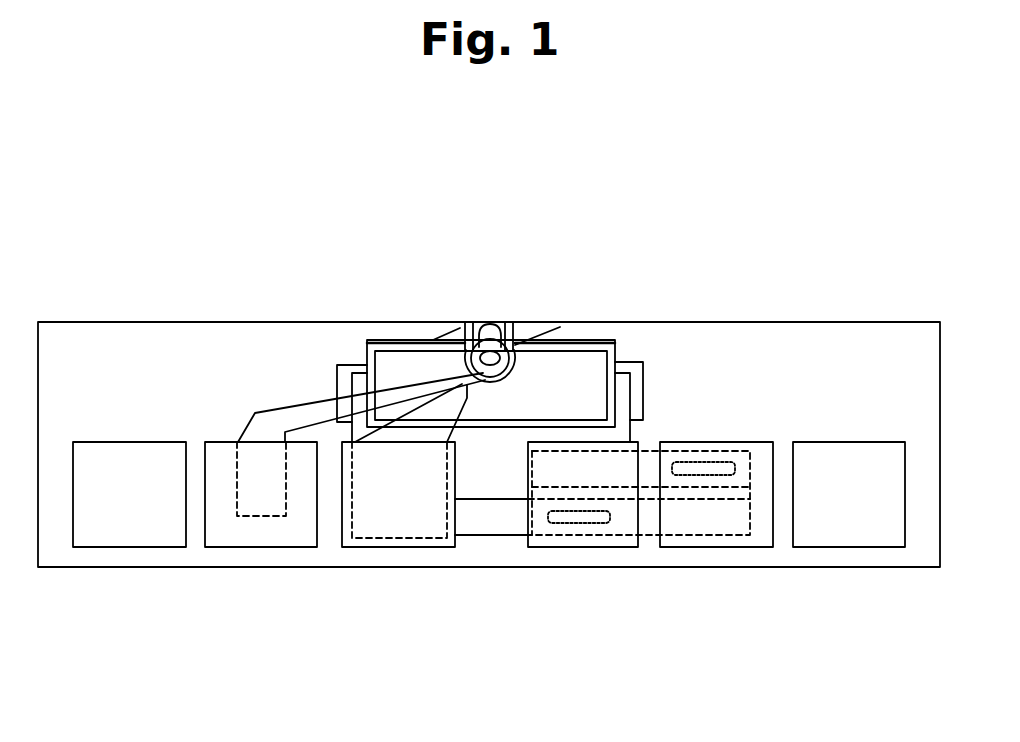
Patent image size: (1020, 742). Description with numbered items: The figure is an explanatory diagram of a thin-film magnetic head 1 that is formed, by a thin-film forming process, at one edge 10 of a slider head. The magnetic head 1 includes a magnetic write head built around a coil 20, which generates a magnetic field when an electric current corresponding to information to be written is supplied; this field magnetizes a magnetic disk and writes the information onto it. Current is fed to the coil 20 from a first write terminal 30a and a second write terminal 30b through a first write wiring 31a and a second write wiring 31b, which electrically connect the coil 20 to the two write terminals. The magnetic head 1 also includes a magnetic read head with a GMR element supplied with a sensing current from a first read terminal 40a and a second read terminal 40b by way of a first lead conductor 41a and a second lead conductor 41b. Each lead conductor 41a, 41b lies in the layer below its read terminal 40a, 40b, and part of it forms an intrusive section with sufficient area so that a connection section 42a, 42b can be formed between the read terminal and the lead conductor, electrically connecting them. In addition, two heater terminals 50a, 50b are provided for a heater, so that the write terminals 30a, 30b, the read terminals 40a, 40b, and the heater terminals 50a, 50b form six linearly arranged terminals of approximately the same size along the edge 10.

The magnetic head 1 is at (778, 157).
The edge of slider head 10 is at (837, 322).
The coil 20 is at (513, 377).
The first write terminal 30a is at (393, 540).
The second write terminal 30b is at (273, 528).
The first write wiring 31a is at (408, 433).
The second write wiring 31b is at (279, 417).
The first read terminal 40a is at (765, 527).
The second read terminal 40b is at (555, 542).
The first lead conductor 41a is at (650, 478).
The second lead conductor 41b is at (473, 510).
The connection section 42a is at (720, 468).
The connection section 42b is at (583, 517).
The heater terminal 50a is at (853, 527).
The heater terminal 50b is at (145, 528).